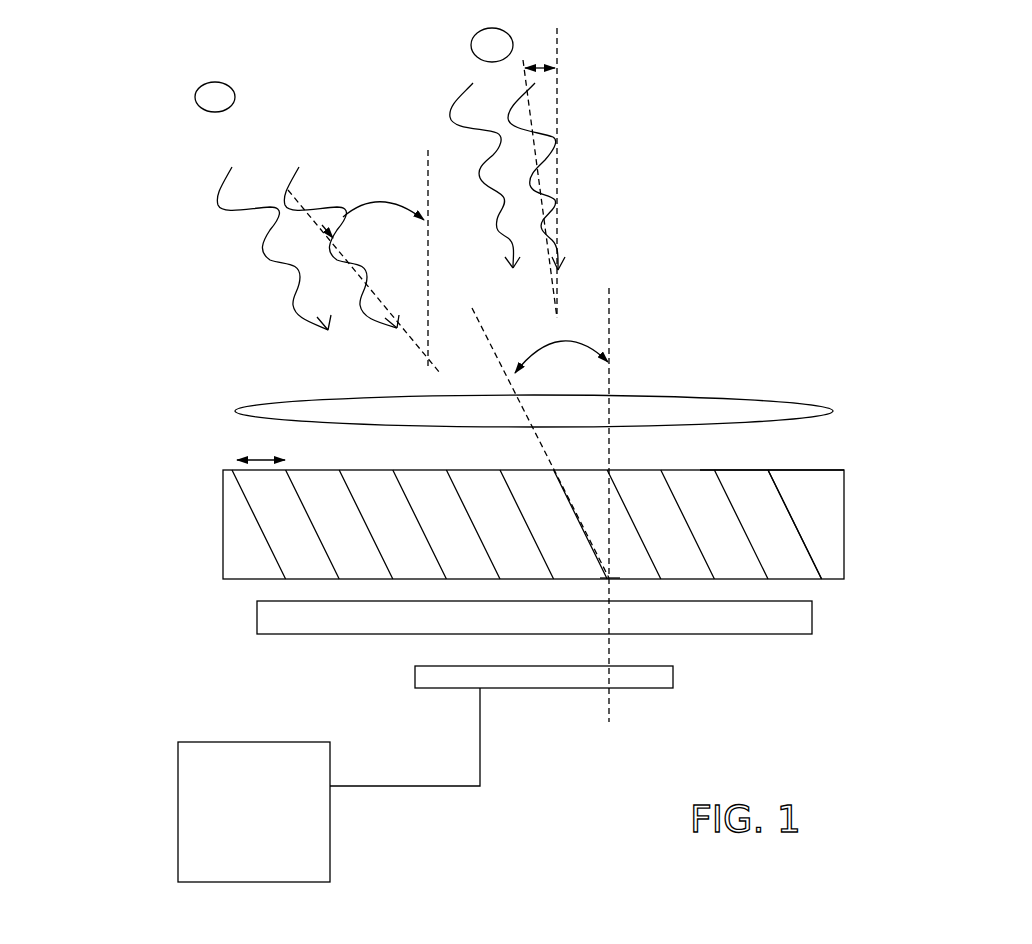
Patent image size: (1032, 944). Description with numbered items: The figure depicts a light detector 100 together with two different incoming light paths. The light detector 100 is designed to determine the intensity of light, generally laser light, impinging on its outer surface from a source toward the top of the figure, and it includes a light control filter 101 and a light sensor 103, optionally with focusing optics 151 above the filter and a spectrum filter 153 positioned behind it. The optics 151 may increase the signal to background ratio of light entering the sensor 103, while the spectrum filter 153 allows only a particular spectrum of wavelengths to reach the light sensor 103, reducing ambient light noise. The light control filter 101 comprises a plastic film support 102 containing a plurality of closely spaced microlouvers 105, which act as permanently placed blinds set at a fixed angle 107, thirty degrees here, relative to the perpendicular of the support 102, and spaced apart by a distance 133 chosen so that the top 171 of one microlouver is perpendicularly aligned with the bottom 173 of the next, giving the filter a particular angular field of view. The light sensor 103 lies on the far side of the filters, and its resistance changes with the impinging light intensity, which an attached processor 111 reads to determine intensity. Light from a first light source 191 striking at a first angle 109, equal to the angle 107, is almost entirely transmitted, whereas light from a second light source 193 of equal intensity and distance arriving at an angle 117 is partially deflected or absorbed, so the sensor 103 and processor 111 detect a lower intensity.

The light detector 100 is at (846, 202).
The light control filter 101 is at (845, 516).
The support 102 is at (823, 494).
The light sensor 103 is at (447, 678).
The microlouvers 105 is at (812, 550).
The fixed angle 107 is at (561, 340).
The first angle 109 is at (377, 202).
The processor 111 is at (198, 742).
The angle 117 is at (537, 63).
The distance 133 is at (263, 458).
The focusing optics 151 is at (330, 405).
The spectrum filter 153 is at (253, 608).
The top of microlouver 171 is at (612, 472).
The bottom of microlouver 173 is at (610, 578).
The first light source 191 is at (200, 102).
The second light source 193 is at (470, 48).